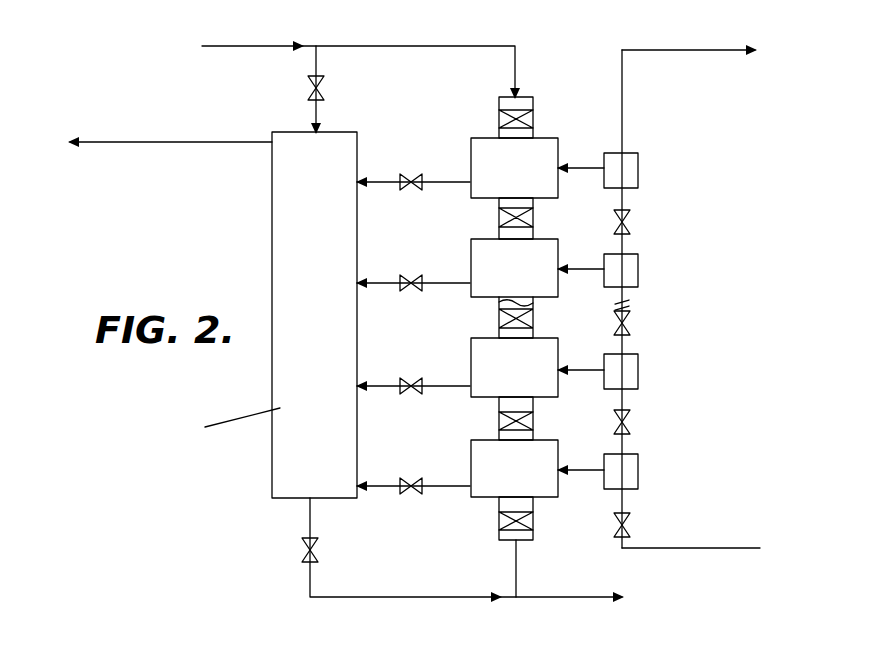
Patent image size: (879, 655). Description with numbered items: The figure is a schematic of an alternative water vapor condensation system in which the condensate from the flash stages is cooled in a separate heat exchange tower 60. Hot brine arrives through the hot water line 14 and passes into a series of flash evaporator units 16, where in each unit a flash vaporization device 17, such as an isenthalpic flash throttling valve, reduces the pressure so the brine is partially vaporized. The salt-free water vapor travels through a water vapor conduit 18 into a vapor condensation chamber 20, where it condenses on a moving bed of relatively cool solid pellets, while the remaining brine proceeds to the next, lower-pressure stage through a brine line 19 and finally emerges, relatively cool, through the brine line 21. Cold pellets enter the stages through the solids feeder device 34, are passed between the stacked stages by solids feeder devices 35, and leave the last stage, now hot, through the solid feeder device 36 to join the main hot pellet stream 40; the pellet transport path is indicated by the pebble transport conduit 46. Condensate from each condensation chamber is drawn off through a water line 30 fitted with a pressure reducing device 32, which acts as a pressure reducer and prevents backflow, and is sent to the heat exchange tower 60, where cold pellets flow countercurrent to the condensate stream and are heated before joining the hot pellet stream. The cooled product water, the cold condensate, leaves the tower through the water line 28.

The hot water line 14 is at (642, 550).
The flash evaporator unit 16 is at (638, 470).
The flash vaporization device 17 is at (626, 418).
The water vapor conduit 18 is at (578, 470).
The brine line 19 is at (623, 442).
The vapor condensation chamber 20 is at (547, 498).
The brine line 21 is at (622, 48).
The water line 28 is at (94, 140).
The water line 30 is at (436, 181).
The pressure reducing device 32 is at (403, 494).
The solids feeder device 34 is at (533, 118).
The solids feeder device 35 is at (499, 413).
The solid feeder device 36 is at (499, 517).
The main hot pellet stream 40 is at (533, 597).
The pebble transport conduit 46 is at (267, 44).
The heat exchange tower 60 is at (272, 237).